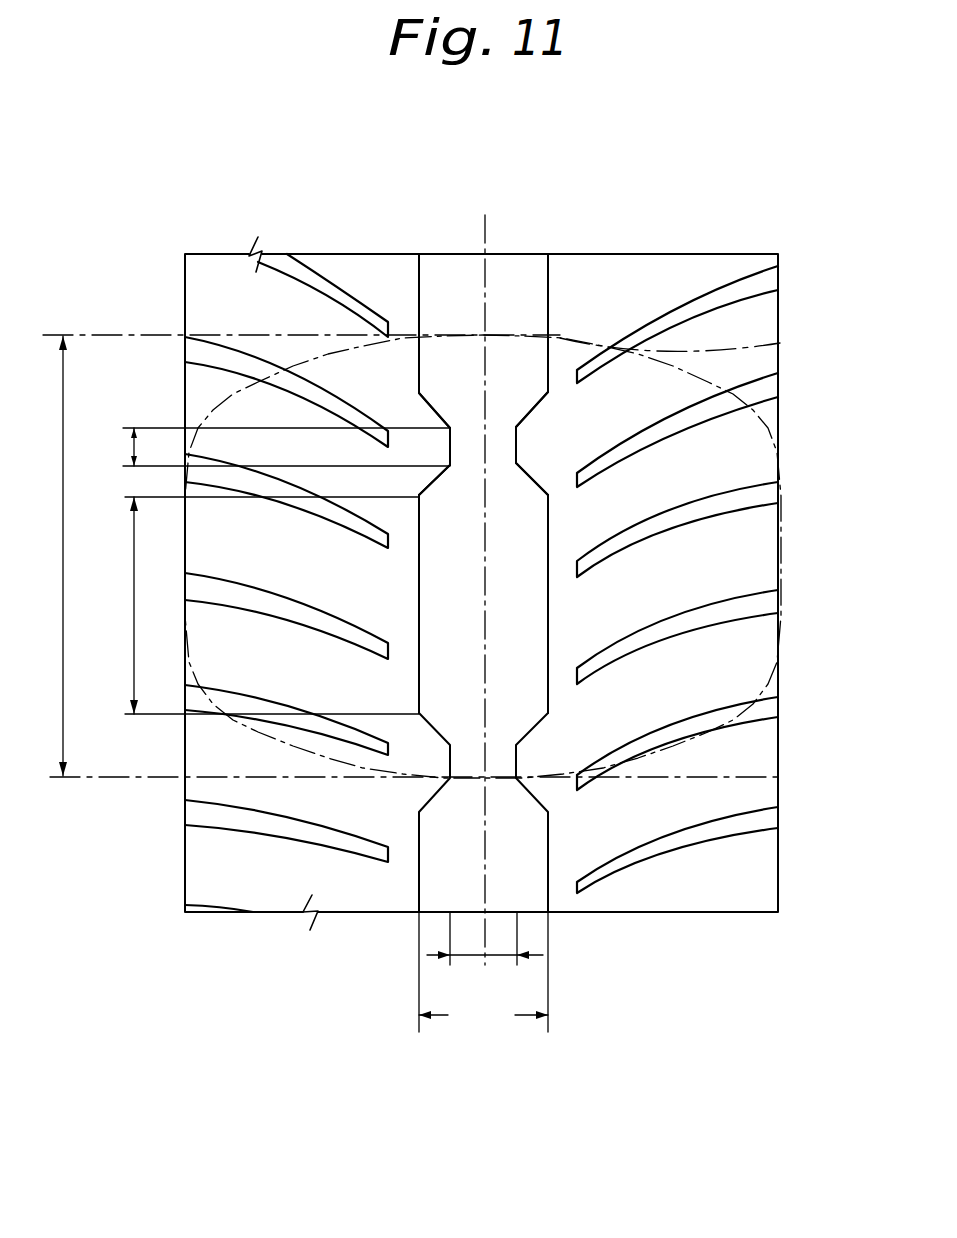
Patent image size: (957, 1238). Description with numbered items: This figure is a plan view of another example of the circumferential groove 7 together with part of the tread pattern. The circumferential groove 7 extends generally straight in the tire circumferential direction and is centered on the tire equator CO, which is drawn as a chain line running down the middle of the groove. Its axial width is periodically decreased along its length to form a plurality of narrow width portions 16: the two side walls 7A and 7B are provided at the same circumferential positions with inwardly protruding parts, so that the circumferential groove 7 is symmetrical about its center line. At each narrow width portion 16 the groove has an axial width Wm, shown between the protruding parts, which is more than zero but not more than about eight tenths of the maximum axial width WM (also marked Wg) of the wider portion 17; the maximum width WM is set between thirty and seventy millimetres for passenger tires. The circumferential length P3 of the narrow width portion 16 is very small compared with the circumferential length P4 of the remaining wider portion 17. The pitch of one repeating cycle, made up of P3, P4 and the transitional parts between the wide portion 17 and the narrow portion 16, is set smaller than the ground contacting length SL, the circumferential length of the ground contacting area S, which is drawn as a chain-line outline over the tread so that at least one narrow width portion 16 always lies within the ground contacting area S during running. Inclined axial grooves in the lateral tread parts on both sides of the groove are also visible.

The circumferential groove 7 is at (531, 543).
The side wall 7A is at (548, 278).
The side wall 7B is at (419, 286).
The tire equator CO is at (485, 238).
The ground contacting area S is at (766, 343).
The narrow width portion 16 is at (516, 447).
The wider portion 17 is at (550, 615).
The ground contacting length SL is at (67, 556).
The circumferential length of the narrow width portion P3 is at (266, 448).
The circumferential length of the wider portion P4 is at (269, 605).
The axial width at the narrow width portion Wm is at (492, 955).
The maximum axial width WM is at (483, 973).
The groove width Wg is at (493, 1051).